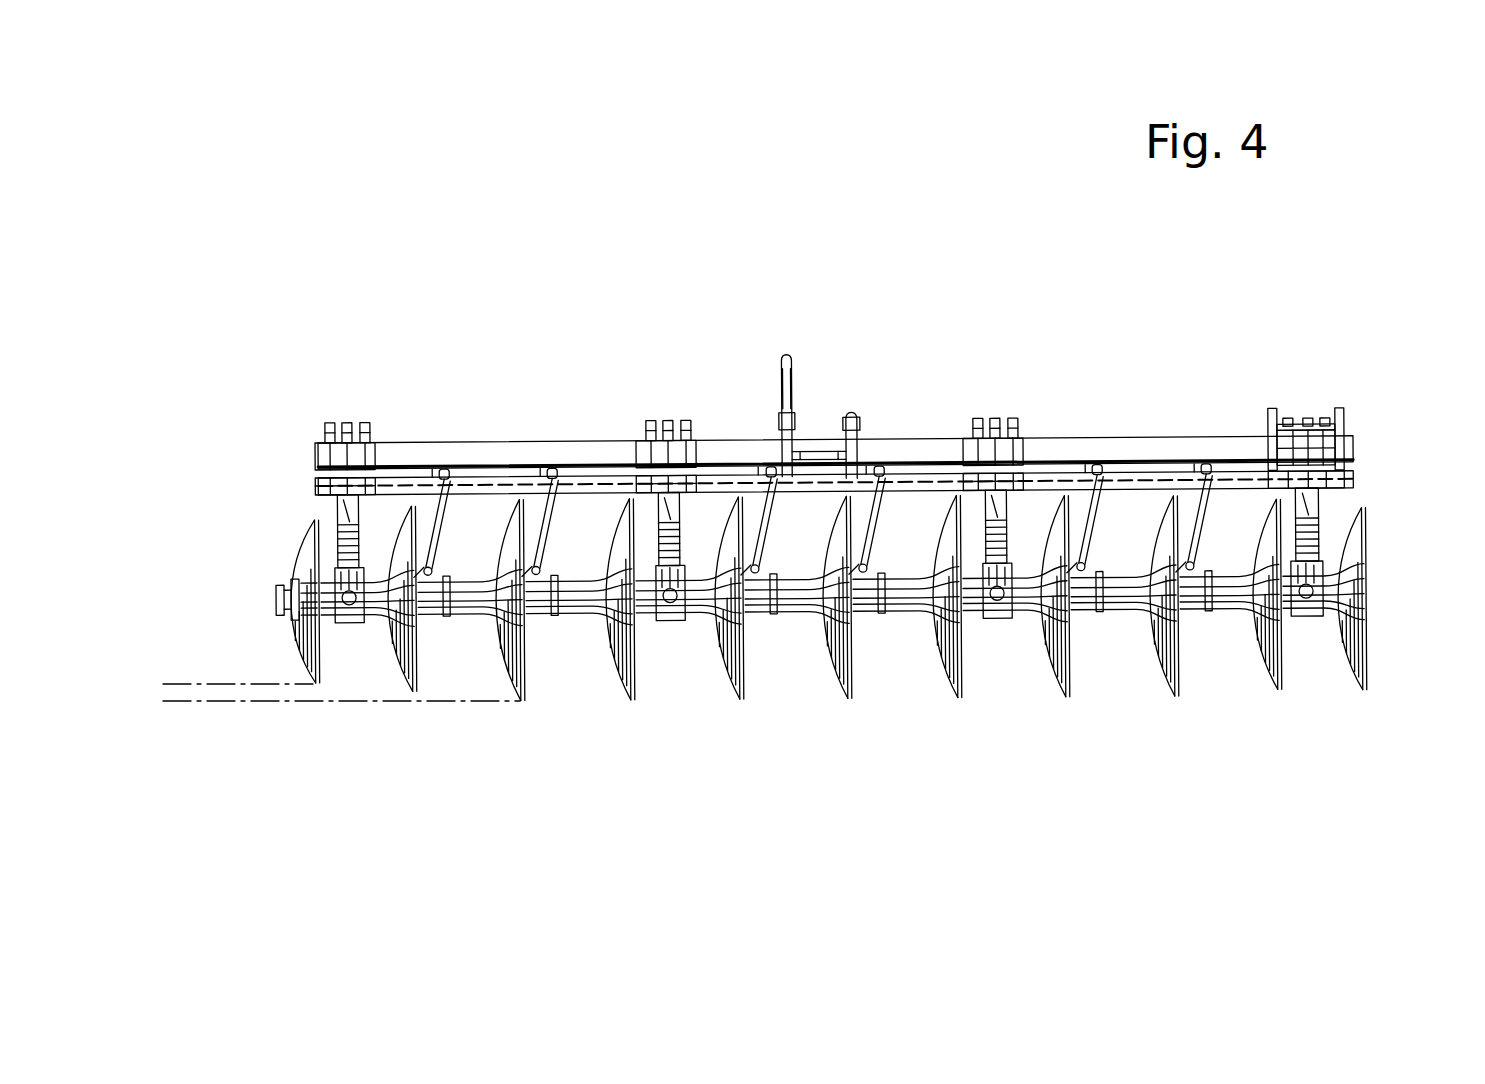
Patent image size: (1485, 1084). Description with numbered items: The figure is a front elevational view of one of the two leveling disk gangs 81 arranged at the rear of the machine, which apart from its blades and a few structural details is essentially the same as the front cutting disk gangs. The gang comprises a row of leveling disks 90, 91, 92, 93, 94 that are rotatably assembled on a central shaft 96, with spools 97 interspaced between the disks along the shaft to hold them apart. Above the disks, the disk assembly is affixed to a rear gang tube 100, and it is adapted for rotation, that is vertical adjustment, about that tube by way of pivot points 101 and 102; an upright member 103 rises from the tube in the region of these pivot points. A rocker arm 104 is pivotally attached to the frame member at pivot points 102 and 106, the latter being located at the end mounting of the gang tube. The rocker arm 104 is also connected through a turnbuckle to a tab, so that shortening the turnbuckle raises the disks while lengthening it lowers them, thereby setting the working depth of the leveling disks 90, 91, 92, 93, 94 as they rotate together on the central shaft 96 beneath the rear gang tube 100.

The disc gang assembly 81 is at (1012, 378).
The disk 90 is at (1188, 703).
The disk 91 is at (1276, 668).
The disk 92 is at (425, 665).
The disk 93 is at (320, 667).
The disk 94 is at (1365, 650).
The central shaft 96 is at (283, 587).
The spools 97 is at (903, 604).
The rear gang tube 100 is at (481, 460).
The pivot point 101 is at (858, 430).
The pivot point 102 is at (794, 423).
The upright rod 103 is at (780, 358).
The rocker arm 104 is at (780, 395).
The pivot point 106 is at (1337, 412).